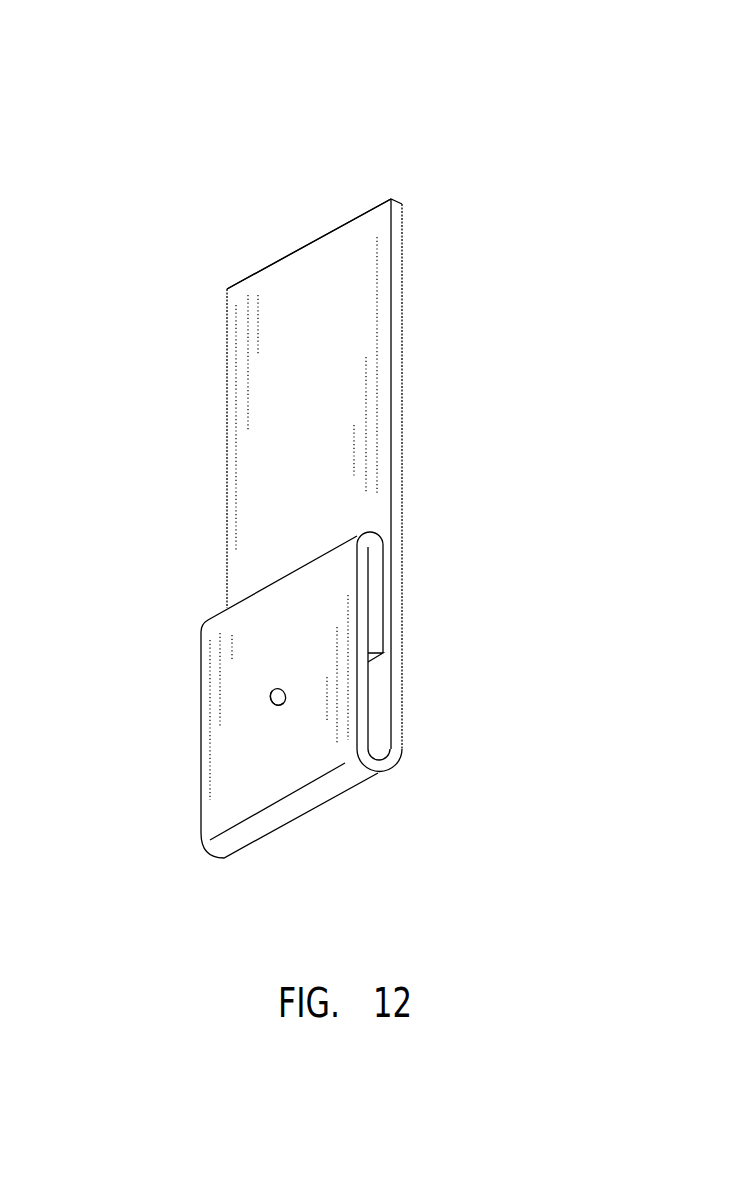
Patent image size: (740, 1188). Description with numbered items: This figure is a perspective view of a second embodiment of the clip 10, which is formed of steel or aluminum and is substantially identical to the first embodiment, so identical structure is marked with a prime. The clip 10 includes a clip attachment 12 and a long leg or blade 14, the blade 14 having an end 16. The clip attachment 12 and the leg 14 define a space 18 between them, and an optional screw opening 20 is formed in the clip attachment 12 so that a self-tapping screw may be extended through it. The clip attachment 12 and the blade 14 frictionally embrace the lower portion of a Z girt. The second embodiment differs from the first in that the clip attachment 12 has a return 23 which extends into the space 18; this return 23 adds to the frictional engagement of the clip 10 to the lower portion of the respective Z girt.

The clip 10 is at (309, 440).
The clip attachment 12 is at (236, 683).
The long leg or blade 14 is at (357, 393).
The end 16 is at (282, 260).
The space 18 is at (377, 723).
The screw opening 20 is at (271, 704).
The return 23 is at (377, 618).